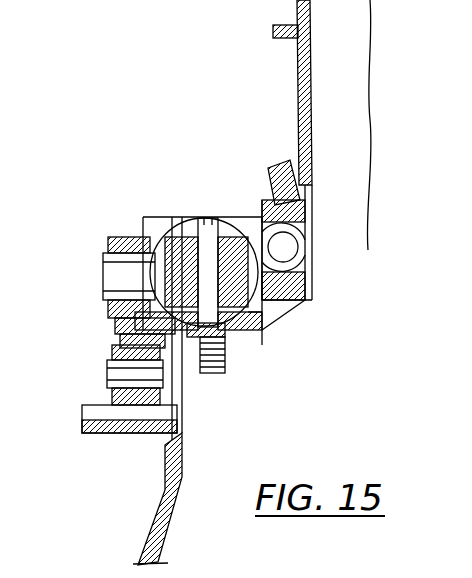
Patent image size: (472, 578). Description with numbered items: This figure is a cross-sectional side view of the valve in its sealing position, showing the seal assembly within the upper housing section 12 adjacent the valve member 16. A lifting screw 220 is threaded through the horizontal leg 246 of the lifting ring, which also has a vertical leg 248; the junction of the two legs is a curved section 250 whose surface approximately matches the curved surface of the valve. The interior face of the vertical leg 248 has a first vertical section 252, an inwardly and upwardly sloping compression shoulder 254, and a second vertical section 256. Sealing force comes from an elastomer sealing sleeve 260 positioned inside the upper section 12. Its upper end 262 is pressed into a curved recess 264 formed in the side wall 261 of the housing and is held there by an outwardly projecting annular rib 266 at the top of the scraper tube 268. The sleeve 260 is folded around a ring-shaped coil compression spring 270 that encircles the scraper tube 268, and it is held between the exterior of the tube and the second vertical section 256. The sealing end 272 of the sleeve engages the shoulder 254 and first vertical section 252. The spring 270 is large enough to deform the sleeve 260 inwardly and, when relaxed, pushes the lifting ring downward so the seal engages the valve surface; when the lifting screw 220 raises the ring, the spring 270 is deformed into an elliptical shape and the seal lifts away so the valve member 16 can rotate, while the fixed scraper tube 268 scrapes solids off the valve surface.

The upper housing section 12 is at (297, 97).
The valve member 16 is at (270, 350).
The lifting screw 220 is at (265, 213).
The horizontal leg 246 is at (192, 367).
The vertical leg 248 is at (273, 308).
The curved section 250 is at (258, 340).
The first vertical section 252 is at (268, 330).
The compression shoulder 254 is at (270, 320).
The second vertical section 256 is at (310, 272).
The elastomer sealing sleeve 260 is at (300, 212).
The side wall 261 is at (310, 140).
The upper end 262 is at (310, 178).
The curved recess 264 is at (281, 176).
The annular rib 266 is at (310, 192).
The scraper tube 268 is at (300, 232).
The compression spring 270 is at (183, 477).
The sealing end 272 is at (275, 325).